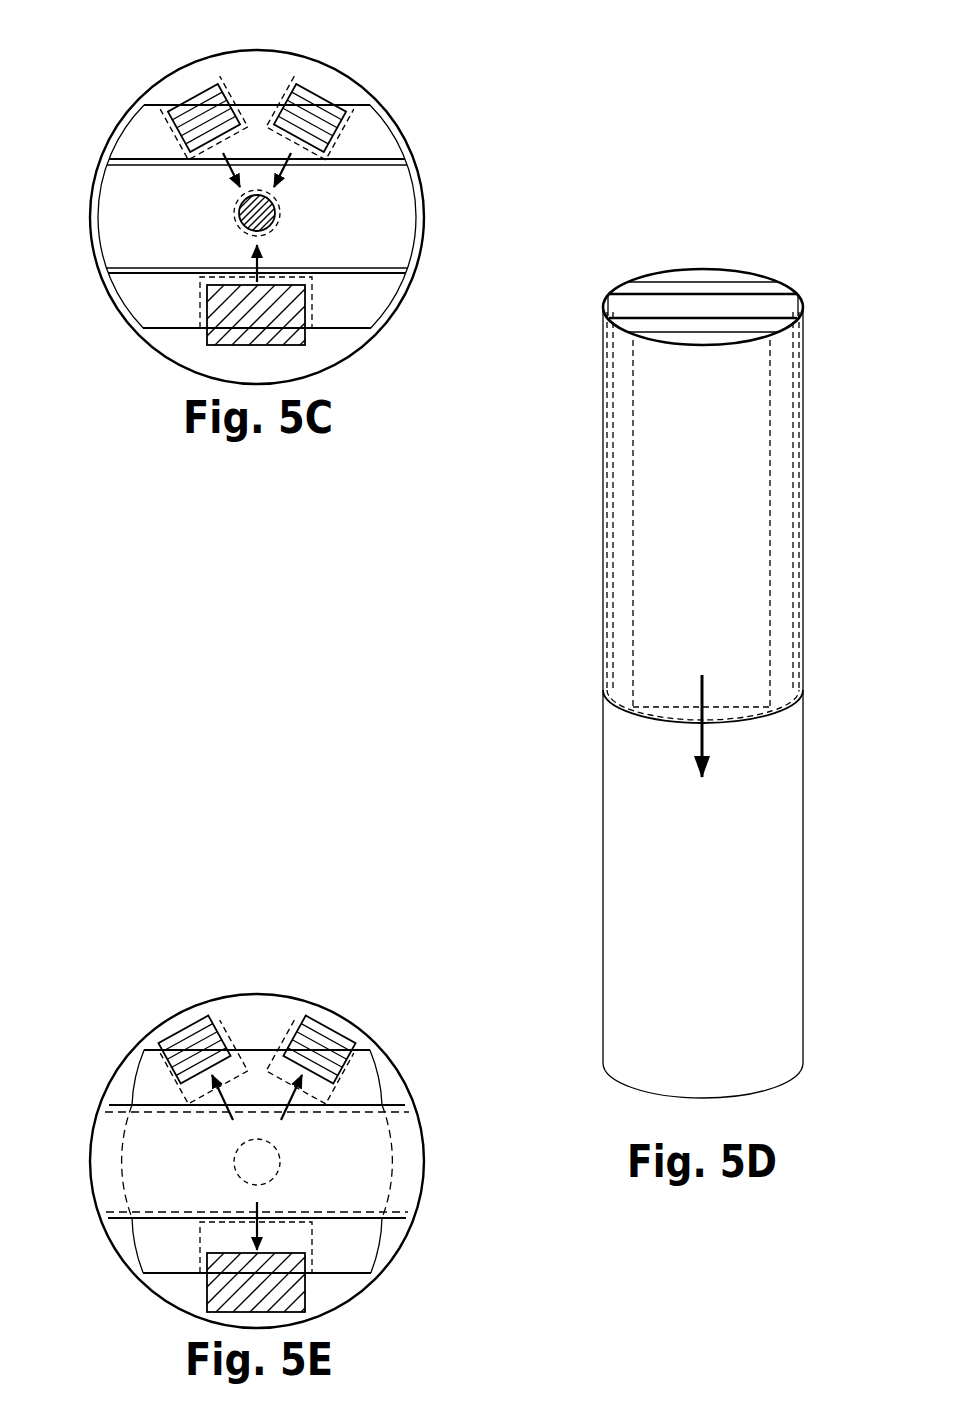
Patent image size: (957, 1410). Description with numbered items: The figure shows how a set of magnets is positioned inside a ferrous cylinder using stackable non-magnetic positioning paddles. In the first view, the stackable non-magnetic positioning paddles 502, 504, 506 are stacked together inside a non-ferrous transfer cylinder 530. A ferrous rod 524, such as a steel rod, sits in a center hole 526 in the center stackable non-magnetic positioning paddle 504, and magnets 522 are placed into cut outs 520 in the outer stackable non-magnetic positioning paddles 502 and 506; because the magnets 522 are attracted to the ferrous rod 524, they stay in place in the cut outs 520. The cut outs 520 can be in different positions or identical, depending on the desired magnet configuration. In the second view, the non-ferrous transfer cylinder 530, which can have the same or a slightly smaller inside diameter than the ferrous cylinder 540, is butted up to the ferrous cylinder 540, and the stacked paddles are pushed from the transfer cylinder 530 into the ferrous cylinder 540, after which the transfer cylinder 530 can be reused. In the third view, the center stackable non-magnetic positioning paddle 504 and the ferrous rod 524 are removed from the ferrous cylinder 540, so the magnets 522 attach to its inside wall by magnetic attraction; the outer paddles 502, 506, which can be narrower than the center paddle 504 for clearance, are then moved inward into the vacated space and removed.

In FIG. 5C, the stackable non-magnetic positioning paddle 502 is at (367, 127).
In FIG. 5D, the stackable non-magnetic positioning paddle 502 is at (687, 287).
In FIG. 5E, the stackable non-magnetic positioning paddle 502 is at (380, 1080).
In FIG. 5C, the center stackable non-magnetic positioning paddle 504 is at (397, 187).
In FIG. 5D, the center stackable non-magnetic positioning paddle 504 is at (658, 307).
In FIG. 5E, the center stackable non-magnetic positioning paddle 504 is at (397, 1152).
In FIG. 5C, the stackable non-magnetic positioning paddle 506 is at (380, 298).
In FIG. 5D, the stackable non-magnetic positioning paddle 506 is at (653, 325).
In FIG. 5E, the stackable non-magnetic positioning paddle 506 is at (380, 1242).
In FIG. 5C, the cut out 520 is at (247, 118).
In FIG. 5E, the cut out 520 is at (257, 1146).
In FIG. 5C, the magnet 522 is at (200, 100).
In FIG. 5E, the magnet 522 is at (187, 1033).
In FIG. 5C, the ferrous rod 524 is at (238, 206).
In FIG. 5C, the central bore 526 is at (233, 232).
In FIG. 5E, the central bore 526 is at (230, 1153).
In FIG. 5C, the non-ferrous transfer cylinder 530 is at (90, 217).
In FIG. 5D, the non-ferrous transfer cylinder 530 is at (601, 490).
In FIG. 5D, the ferrous cylinder 540 is at (602, 862).
In FIG. 5E, the ferrous cylinder 540 is at (165, 1300).